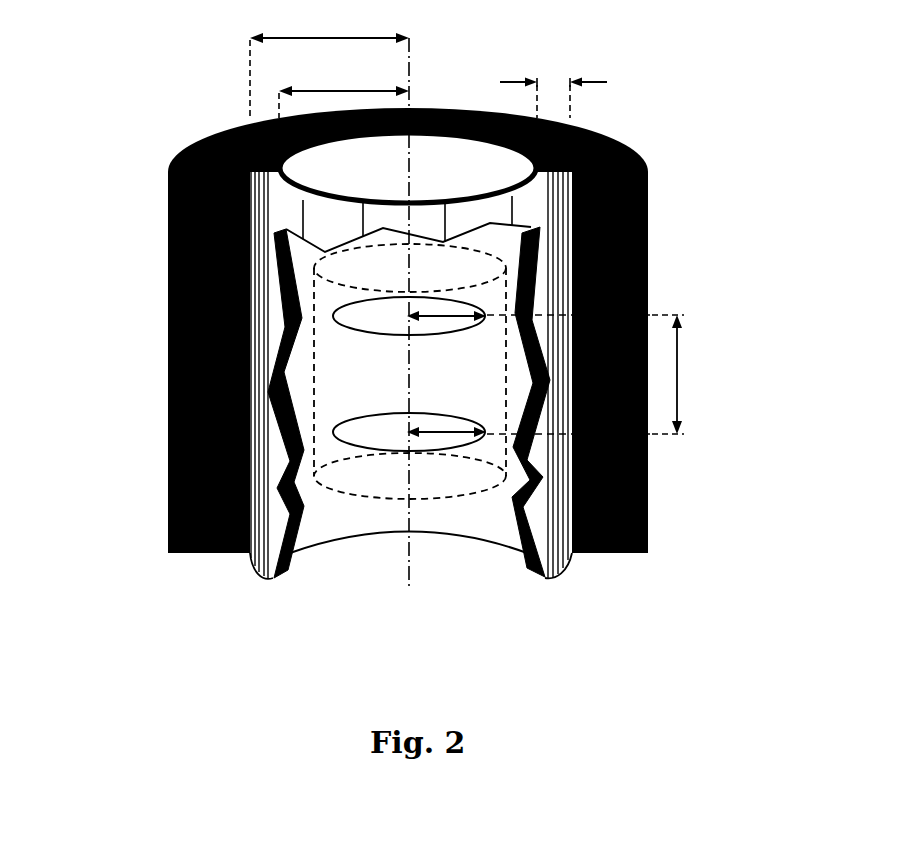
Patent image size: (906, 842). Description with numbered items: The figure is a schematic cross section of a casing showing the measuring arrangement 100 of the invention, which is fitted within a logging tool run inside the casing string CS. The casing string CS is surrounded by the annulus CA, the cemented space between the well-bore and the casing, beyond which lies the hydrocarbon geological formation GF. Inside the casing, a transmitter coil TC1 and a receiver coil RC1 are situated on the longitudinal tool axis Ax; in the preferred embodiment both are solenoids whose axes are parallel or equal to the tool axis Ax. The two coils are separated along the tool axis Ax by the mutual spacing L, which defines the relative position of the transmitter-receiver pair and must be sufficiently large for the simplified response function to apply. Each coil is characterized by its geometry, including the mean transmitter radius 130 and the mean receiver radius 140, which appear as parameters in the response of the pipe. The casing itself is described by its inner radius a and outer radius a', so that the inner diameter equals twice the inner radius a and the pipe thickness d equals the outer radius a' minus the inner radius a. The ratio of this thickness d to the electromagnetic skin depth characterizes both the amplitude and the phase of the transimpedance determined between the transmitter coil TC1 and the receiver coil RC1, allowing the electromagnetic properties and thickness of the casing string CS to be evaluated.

The casing string CS is at (168, 228).
The annulus CA is at (230, 127).
The hydrocarbon geological formation GF is at (158, 178).
The measuring arrangement 100 is at (324, 505).
The receiver coil RC1 is at (333, 316).
The transmitter coil TC1 is at (333, 432).
The mean receiver radius b2 140 is at (447, 316).
The mean transmitter radius b1 130 is at (445, 432).
The spacing L is at (678, 374).
The tool axis Ax is at (410, 587).
The outer radius of the casing a' is at (329, 65).
The inner radius of the casing a is at (344, 92).
The pipe thickness d is at (562, 95).